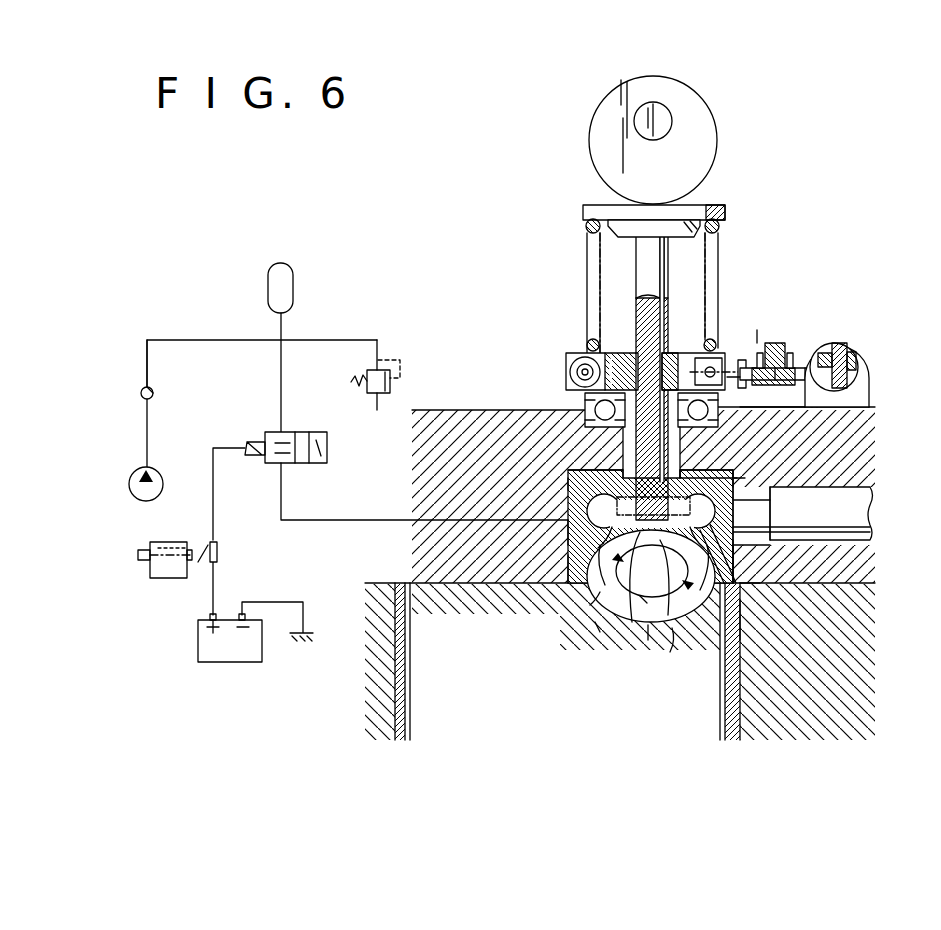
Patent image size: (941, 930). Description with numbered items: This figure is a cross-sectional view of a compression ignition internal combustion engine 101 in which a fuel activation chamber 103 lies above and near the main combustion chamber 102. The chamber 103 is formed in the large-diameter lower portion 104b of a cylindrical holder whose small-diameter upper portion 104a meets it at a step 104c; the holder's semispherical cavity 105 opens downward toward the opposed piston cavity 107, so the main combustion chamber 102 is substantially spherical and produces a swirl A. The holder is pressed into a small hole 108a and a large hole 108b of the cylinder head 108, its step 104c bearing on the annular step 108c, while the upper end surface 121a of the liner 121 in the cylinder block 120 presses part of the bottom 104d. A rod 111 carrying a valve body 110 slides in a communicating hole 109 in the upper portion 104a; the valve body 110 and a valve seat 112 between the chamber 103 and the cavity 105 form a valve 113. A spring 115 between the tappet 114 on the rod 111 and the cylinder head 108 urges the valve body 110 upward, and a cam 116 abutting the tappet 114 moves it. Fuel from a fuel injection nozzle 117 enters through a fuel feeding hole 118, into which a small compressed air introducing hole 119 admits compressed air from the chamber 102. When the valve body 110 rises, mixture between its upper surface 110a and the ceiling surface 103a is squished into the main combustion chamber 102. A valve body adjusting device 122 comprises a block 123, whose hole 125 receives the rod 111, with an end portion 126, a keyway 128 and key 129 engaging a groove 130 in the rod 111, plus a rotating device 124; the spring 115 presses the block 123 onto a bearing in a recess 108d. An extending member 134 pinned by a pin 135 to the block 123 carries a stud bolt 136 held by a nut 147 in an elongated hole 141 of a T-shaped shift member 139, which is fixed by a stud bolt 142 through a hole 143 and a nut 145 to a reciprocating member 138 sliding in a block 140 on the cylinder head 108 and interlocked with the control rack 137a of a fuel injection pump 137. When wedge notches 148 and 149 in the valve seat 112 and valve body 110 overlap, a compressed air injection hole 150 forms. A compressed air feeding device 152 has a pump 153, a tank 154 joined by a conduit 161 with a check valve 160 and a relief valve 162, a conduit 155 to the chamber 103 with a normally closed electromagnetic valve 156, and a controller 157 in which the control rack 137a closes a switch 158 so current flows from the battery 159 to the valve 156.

The internal combustion engine 101 is at (565, 200).
The main combustion chamber 102 is at (594, 630).
The fuel activation chamber 103 is at (568, 503).
The ceiling surface 103a is at (595, 503).
The upper portion 104a is at (723, 456).
The lower portion 104b is at (778, 566).
The step 104c is at (736, 479).
The bottom 104d is at (738, 620).
The cavity 105 is at (580, 592).
The cavity 107 is at (670, 651).
The cylinder head 108 is at (472, 472).
The hole 108a is at (623, 462).
The hole 108b is at (568, 527).
The annular step 108c is at (573, 470).
The recess 108d is at (810, 409).
The communicating hole 109 is at (625, 432).
The valve body 110 is at (651, 576).
The upper surface 110a is at (801, 522).
The rod 111 is at (637, 259).
The valve seat 112 is at (745, 560).
The valve 113 is at (662, 661).
The tappet 114 is at (707, 206).
The spring 115 is at (720, 227).
The cam 116 is at (703, 123).
The fuel injection nozzle 117 is at (905, 500).
The fuel feeding hole 118 is at (793, 513).
The compressed air introducing hole 119 is at (728, 545).
The cylinder block 120 is at (822, 691).
The liner 121 is at (413, 700).
The upper end surface 121a is at (745, 586).
The valve body adjusting device 122 is at (767, 310).
The block 123 is at (568, 350).
The rotating device 124 is at (853, 332).
The hole 125 is at (635, 343).
The end portion 126 is at (567, 372).
The keyway 128 is at (678, 351).
The key 129 is at (661, 337).
The groove 130 is at (678, 462).
The extending member 134 is at (782, 383).
The pin 135 is at (714, 366).
The stud bolt 136 is at (771, 342).
The fuel injection pump 137 is at (148, 572).
The control rack 137a is at (140, 553).
The reciprocating member 138 is at (863, 383).
The shift member 139 is at (813, 363).
The block 140 is at (870, 393).
The elongated hole 141 is at (820, 405).
The stud bolt 142 is at (834, 340).
The hole 143 is at (860, 354).
The nut 145 is at (853, 342).
The nut 147 is at (760, 347).
The notch 148 is at (568, 556).
The notch 149 is at (644, 605).
The compressed air injection hole 150 is at (590, 612).
The compressed air feeding device 152 is at (186, 326).
The pump 153 is at (131, 476).
The tank 154 is at (296, 279).
The conduit 155 is at (327, 520).
The electromagnetic valve 156 is at (303, 432).
The controller 157 is at (198, 597).
The switch 158 is at (218, 552).
The battery 159 is at (232, 663).
The check valve 160 is at (141, 396).
The conduit 161 is at (145, 372).
The relief valve 162 is at (368, 373).
The swirl A is at (637, 637).